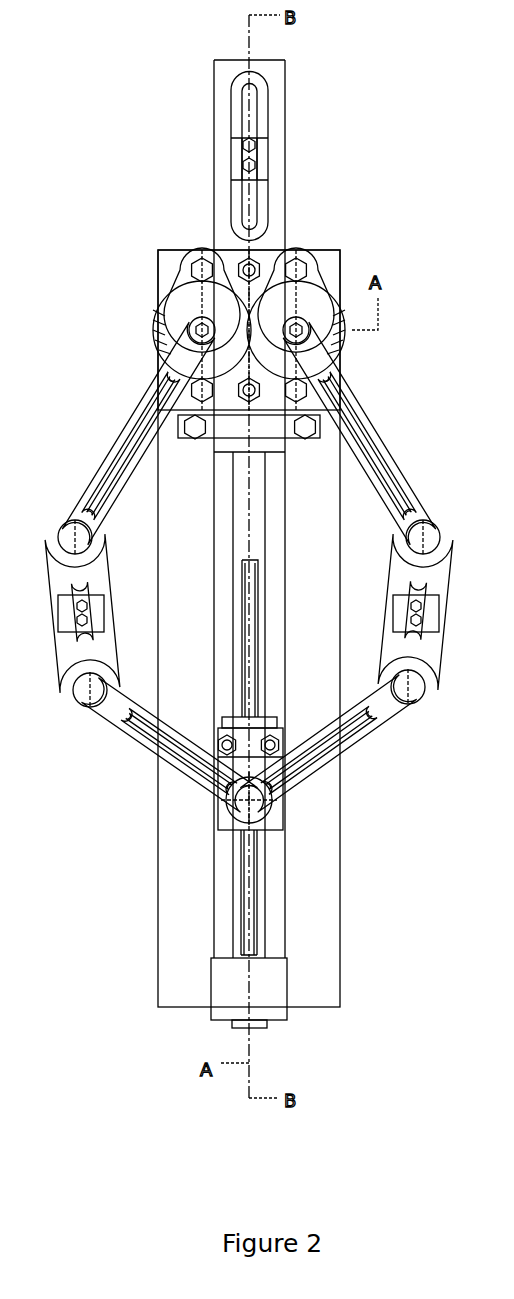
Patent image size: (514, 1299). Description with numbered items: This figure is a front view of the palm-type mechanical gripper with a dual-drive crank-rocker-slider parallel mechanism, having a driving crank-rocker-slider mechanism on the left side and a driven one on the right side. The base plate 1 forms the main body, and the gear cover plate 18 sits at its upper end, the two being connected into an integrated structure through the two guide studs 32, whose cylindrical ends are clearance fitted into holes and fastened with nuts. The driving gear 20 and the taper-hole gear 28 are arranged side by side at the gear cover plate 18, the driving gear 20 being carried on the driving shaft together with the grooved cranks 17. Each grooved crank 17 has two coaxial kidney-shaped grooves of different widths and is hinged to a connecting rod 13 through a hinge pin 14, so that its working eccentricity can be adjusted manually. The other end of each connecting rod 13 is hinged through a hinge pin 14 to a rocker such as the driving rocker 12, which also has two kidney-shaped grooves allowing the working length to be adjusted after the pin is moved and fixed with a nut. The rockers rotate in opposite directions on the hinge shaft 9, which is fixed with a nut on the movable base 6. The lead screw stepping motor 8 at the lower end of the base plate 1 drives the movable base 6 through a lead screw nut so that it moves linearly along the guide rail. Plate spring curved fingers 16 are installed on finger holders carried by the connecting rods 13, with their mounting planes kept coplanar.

The base plate 1 is at (180, 937).
The movable base 6 is at (200, 780).
The lead screw stepping motor 8 is at (233, 980).
The hinge shaft 9 is at (213, 835).
The driving rocker 12 is at (157, 757).
The connecting rod 13 is at (66, 568).
The hinge pin 14 is at (90, 682).
The plate spring curved finger 16 is at (70, 617).
The grooved crank 17 is at (130, 420).
The gear cover plate 18 is at (170, 268).
The driving gear 20 is at (152, 325).
The taper-hole gear 28 is at (350, 335).
The guide stud 32 is at (232, 263).